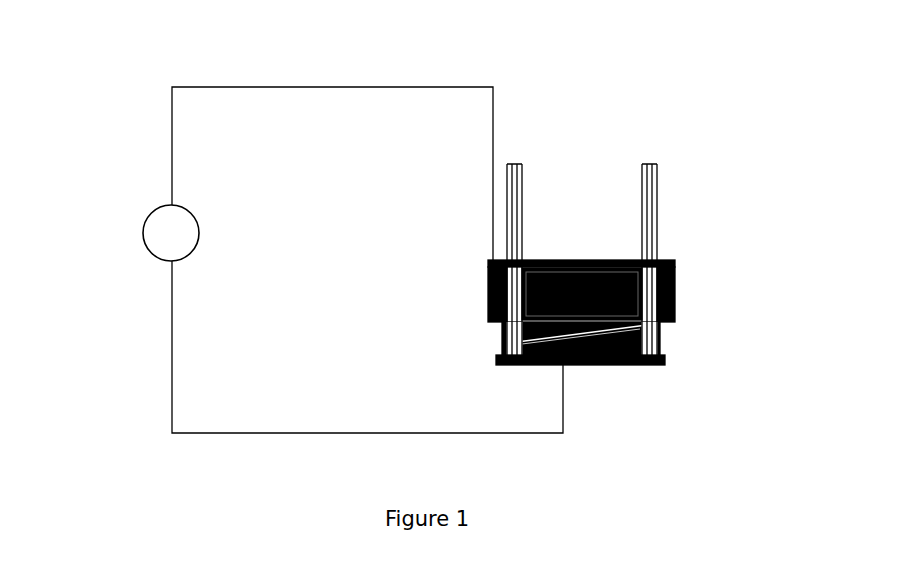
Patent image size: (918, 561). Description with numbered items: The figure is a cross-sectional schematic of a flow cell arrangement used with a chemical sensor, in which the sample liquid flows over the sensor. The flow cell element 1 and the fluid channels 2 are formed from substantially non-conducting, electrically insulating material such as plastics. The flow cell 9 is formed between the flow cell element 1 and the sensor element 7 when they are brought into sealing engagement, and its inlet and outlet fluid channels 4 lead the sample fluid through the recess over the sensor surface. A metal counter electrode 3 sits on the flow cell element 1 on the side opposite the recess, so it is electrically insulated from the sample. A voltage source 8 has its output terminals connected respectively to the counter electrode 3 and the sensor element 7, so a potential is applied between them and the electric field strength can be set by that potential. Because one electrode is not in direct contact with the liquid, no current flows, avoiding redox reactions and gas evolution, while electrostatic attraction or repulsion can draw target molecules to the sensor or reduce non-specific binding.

The flow cell element 1 is at (498, 305).
The fluid channels 2 is at (647, 163).
The counter electrode 3 is at (675, 260).
The inlet and outlet fluid channels 4 is at (517, 342).
The sensor element 7 is at (665, 361).
The voltage source 8 is at (147, 217).
The flow cell 9 is at (643, 350).